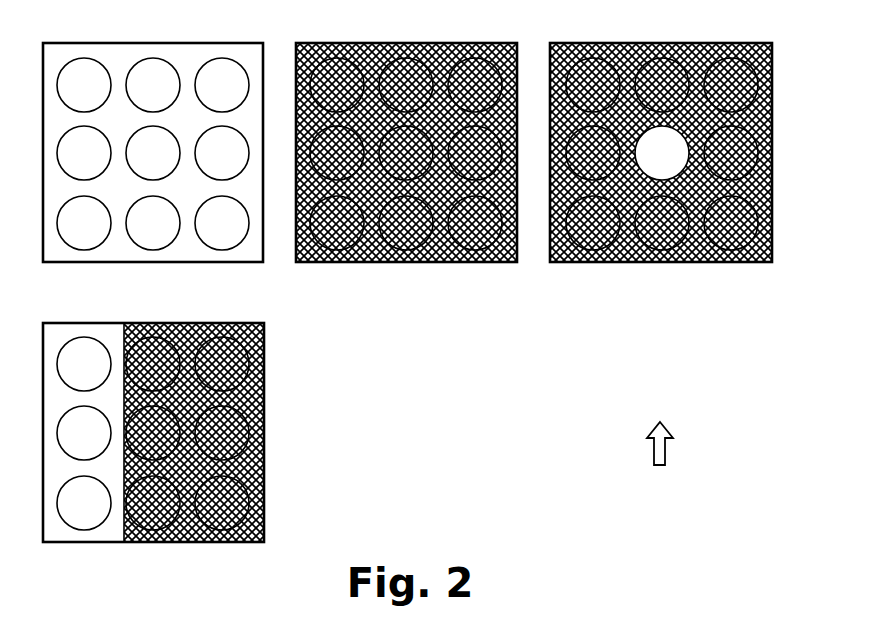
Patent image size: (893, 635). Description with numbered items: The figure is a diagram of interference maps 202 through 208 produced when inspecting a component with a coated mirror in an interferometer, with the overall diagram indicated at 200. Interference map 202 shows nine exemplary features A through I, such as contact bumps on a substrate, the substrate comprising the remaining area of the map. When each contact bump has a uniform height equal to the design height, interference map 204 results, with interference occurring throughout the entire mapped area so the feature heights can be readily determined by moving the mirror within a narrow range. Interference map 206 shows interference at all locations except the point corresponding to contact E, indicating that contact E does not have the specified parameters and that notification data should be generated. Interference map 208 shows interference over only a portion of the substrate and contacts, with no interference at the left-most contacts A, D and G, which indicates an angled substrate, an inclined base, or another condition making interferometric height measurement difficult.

The processing sequence / method flow 200 is at (636, 443).
The interference map 202 is at (153, 172).
The interference map 204 is at (406, 172).
The interference map 206 is at (661, 172).
The interference map 208 is at (178, 432).